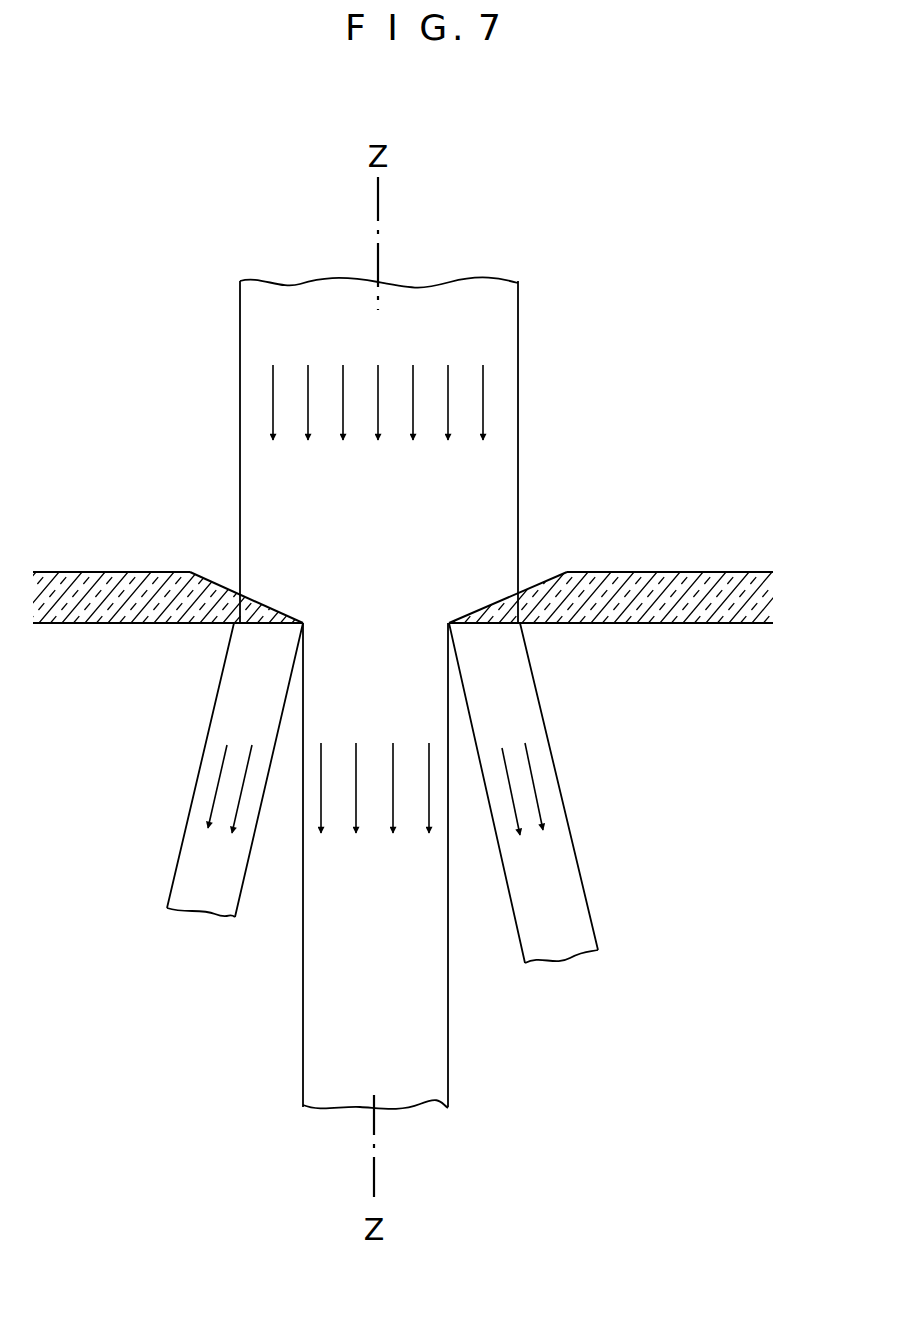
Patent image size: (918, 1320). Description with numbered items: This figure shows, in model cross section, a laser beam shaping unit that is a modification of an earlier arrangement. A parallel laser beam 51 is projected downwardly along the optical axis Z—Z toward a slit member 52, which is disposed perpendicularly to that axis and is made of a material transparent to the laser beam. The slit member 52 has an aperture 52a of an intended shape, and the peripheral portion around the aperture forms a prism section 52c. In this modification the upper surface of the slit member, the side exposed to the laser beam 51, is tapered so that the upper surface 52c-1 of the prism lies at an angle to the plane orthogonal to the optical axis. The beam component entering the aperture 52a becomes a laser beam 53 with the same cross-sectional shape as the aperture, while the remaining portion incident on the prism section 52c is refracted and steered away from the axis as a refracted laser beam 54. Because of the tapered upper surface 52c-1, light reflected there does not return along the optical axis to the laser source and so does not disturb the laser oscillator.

The parallel laser beam 51 is at (518, 333).
The slit member 52 is at (585, 556).
The aperture 52a is at (375, 618).
The prism section 52c is at (250, 623).
The upper surface of the prism 52c-1 is at (260, 600).
The laser beam 53 is at (448, 1038).
The refracted laser beam 54 is at (175, 877).